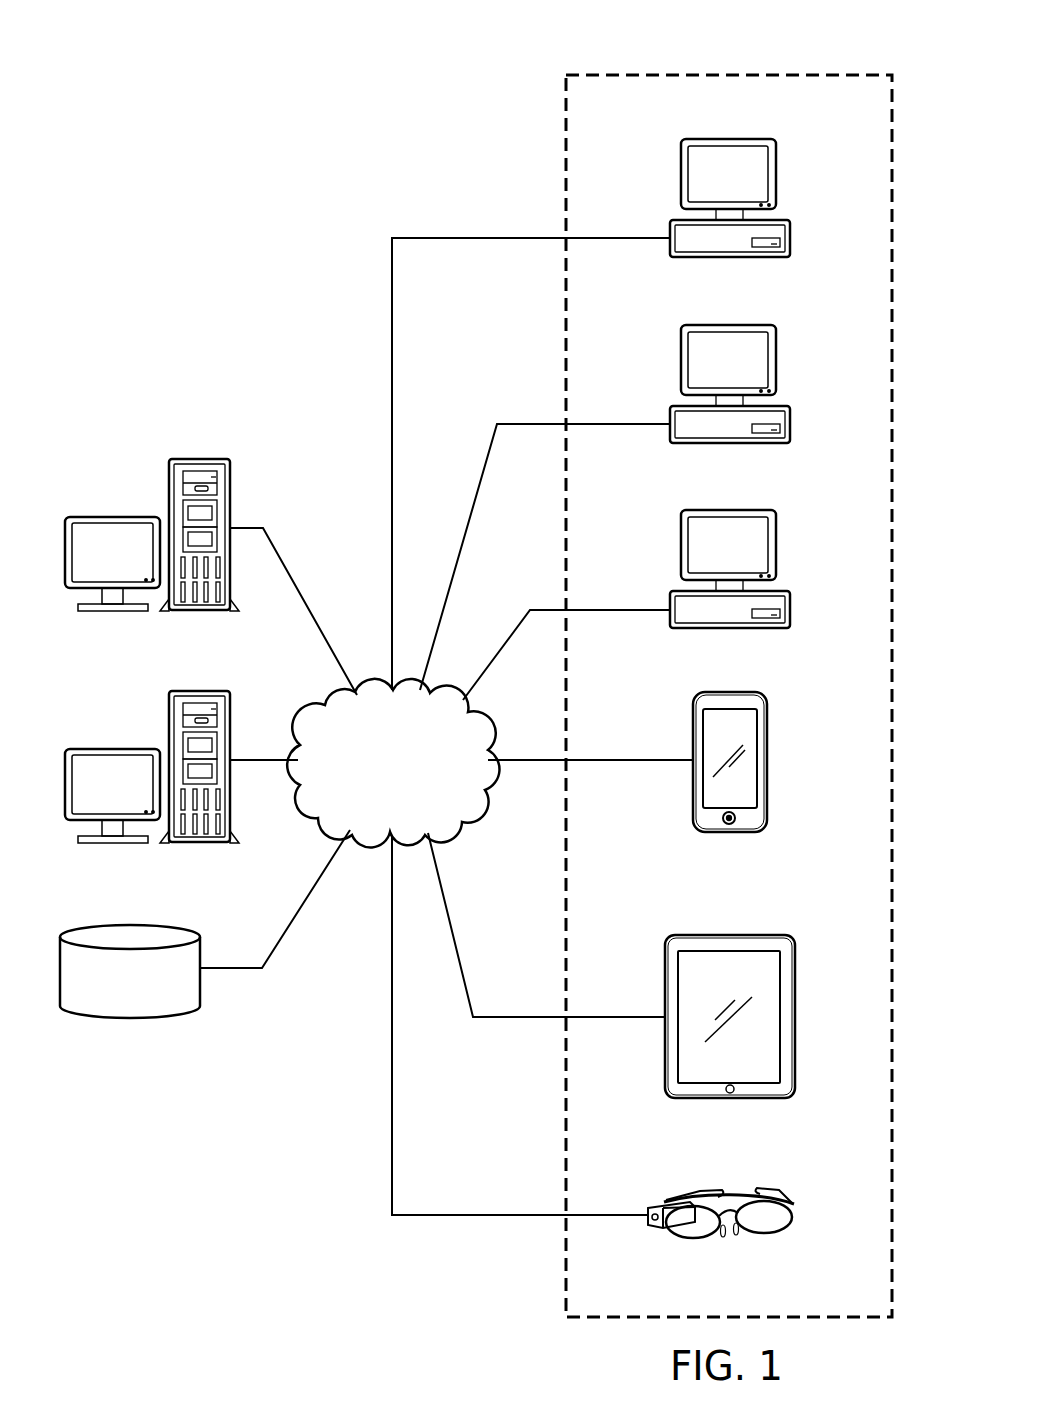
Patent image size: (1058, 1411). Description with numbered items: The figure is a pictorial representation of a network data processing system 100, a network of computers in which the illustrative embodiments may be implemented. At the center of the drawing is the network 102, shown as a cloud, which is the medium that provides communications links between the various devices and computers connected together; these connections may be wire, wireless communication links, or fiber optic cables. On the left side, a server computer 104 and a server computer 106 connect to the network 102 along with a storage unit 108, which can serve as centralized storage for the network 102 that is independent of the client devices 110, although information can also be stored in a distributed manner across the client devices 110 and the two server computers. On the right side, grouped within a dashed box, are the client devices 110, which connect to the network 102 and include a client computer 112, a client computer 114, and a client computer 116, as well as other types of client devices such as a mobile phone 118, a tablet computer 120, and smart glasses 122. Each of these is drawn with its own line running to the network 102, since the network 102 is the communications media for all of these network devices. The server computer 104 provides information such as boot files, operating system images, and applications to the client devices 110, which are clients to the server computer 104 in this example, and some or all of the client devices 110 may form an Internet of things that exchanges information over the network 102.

The network data processing system 100 is at (250, 328).
The network 102 is at (415, 795).
The server computer 104 is at (113, 517).
The server computer 106 is at (113, 748).
The storage unit 108 is at (130, 1019).
The client devices 110 is at (801, 65).
The client computer 112 is at (778, 176).
The client computer 114 is at (778, 362).
The client computer 116 is at (778, 547).
The mobile phone 118 is at (769, 778).
The tablet computer 120 is at (797, 1028).
The smart glasses 122 is at (793, 1220).